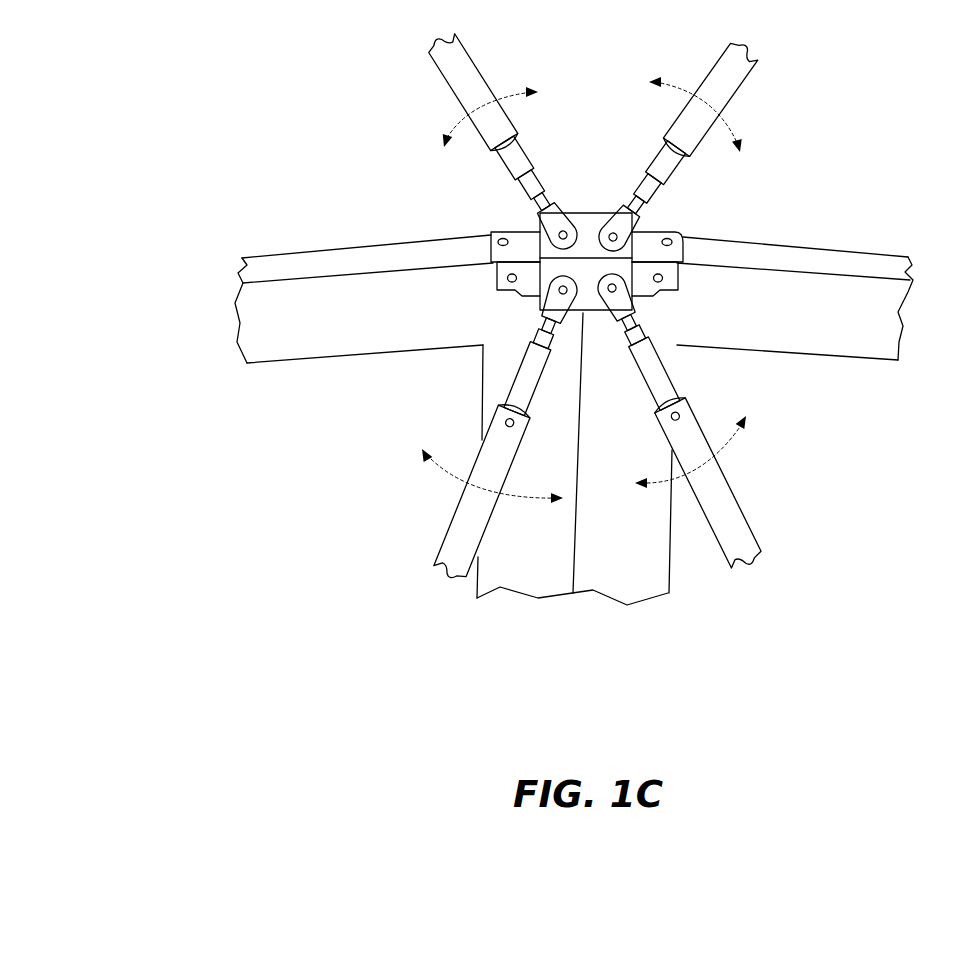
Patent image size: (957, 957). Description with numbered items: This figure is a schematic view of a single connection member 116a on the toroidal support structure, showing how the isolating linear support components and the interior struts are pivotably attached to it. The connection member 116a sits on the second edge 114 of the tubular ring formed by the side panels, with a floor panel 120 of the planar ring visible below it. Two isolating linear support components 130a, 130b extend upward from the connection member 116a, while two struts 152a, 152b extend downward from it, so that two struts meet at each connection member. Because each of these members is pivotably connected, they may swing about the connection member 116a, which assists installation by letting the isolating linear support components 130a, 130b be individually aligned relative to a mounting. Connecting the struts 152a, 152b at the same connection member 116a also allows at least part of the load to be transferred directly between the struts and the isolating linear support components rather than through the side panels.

The second edge 114 is at (292, 255).
The floor panel 120 is at (263, 320).
The connection member 116a is at (543, 228).
The isolating linear support component 130a is at (462, 70).
The isolating linear support component 130b is at (728, 72).
The strut 152a is at (463, 545).
The strut 152b is at (737, 533).